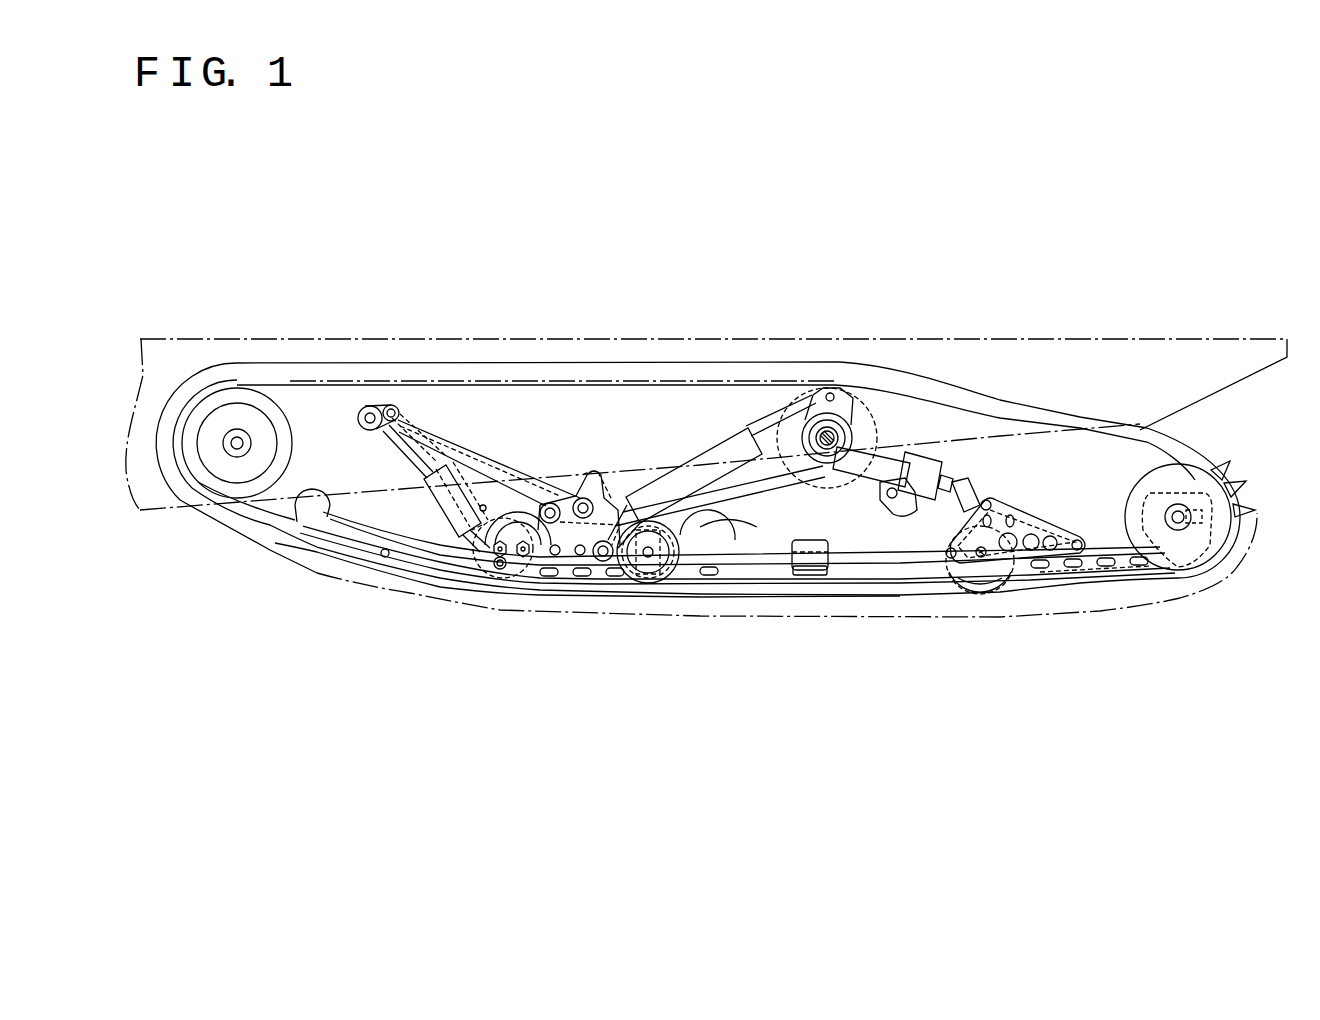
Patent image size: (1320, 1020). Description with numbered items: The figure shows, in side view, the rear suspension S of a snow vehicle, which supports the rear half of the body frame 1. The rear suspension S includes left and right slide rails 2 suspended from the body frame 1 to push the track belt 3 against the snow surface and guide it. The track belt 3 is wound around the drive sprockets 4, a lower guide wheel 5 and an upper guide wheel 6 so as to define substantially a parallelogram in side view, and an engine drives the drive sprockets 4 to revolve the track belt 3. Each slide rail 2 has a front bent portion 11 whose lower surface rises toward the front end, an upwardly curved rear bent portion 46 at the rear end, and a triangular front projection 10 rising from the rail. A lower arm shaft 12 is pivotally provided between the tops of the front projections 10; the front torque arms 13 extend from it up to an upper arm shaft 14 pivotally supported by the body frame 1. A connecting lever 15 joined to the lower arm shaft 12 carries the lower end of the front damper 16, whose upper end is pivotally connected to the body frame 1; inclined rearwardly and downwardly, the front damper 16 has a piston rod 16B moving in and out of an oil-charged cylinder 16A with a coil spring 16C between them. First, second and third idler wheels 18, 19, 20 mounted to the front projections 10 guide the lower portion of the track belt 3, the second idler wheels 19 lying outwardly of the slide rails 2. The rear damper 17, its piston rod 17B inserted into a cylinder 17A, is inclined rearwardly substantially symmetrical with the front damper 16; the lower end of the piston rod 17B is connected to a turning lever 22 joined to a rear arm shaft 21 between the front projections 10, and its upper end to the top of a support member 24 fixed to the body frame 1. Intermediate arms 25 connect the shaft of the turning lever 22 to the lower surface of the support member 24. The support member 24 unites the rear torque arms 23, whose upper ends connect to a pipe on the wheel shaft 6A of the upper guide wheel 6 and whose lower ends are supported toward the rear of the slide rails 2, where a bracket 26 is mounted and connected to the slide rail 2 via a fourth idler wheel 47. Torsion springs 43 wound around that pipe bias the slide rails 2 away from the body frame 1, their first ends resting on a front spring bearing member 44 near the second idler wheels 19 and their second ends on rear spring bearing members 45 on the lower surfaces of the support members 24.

The body frame 1 is at (1140, 342).
The slide rails 2 is at (853, 580).
The track belt 3 is at (240, 527).
The drive sprockets 4 is at (214, 398).
The lower guide wheel 5 is at (1223, 543).
The upper guide wheel 6 is at (800, 400).
The wheel shaft 6A is at (850, 430).
The front projection 10 is at (567, 577).
The front bent portion 11 is at (348, 568).
The lower arm shaft 12 is at (585, 563).
The front torque arms 13 is at (500, 468).
The upper arm shaft 14 is at (362, 412).
The connecting lever 15 is at (585, 497).
The front damper 16 is at (431, 466).
The cylinder 16A is at (438, 548).
The piston rod 16B is at (417, 455).
The coil spring 16C is at (418, 525).
The rear damper 17 is at (712, 410).
The cylinder 17A is at (652, 480).
The piston rod 17B is at (762, 450).
The first idler wheels 18 is at (545, 504).
The second idler wheels 19 is at (672, 566).
The third idler wheels 20 is at (750, 570).
The rear arm shaft 21 is at (608, 563).
The turning lever 22 is at (606, 530).
The rear torque arms 23 is at (952, 538).
The support member 24 is at (913, 495).
The intermediate arms 25 is at (716, 570).
The bracket 26 is at (1052, 512).
The torsion springs 43 is at (790, 573).
The front spring bearing member 44 is at (645, 584).
The rear spring bearing members 45 is at (892, 515).
The rear bent portion 46 is at (1120, 580).
The fourth idler wheel 47 is at (1000, 582).
The rear suspension S is at (733, 405).